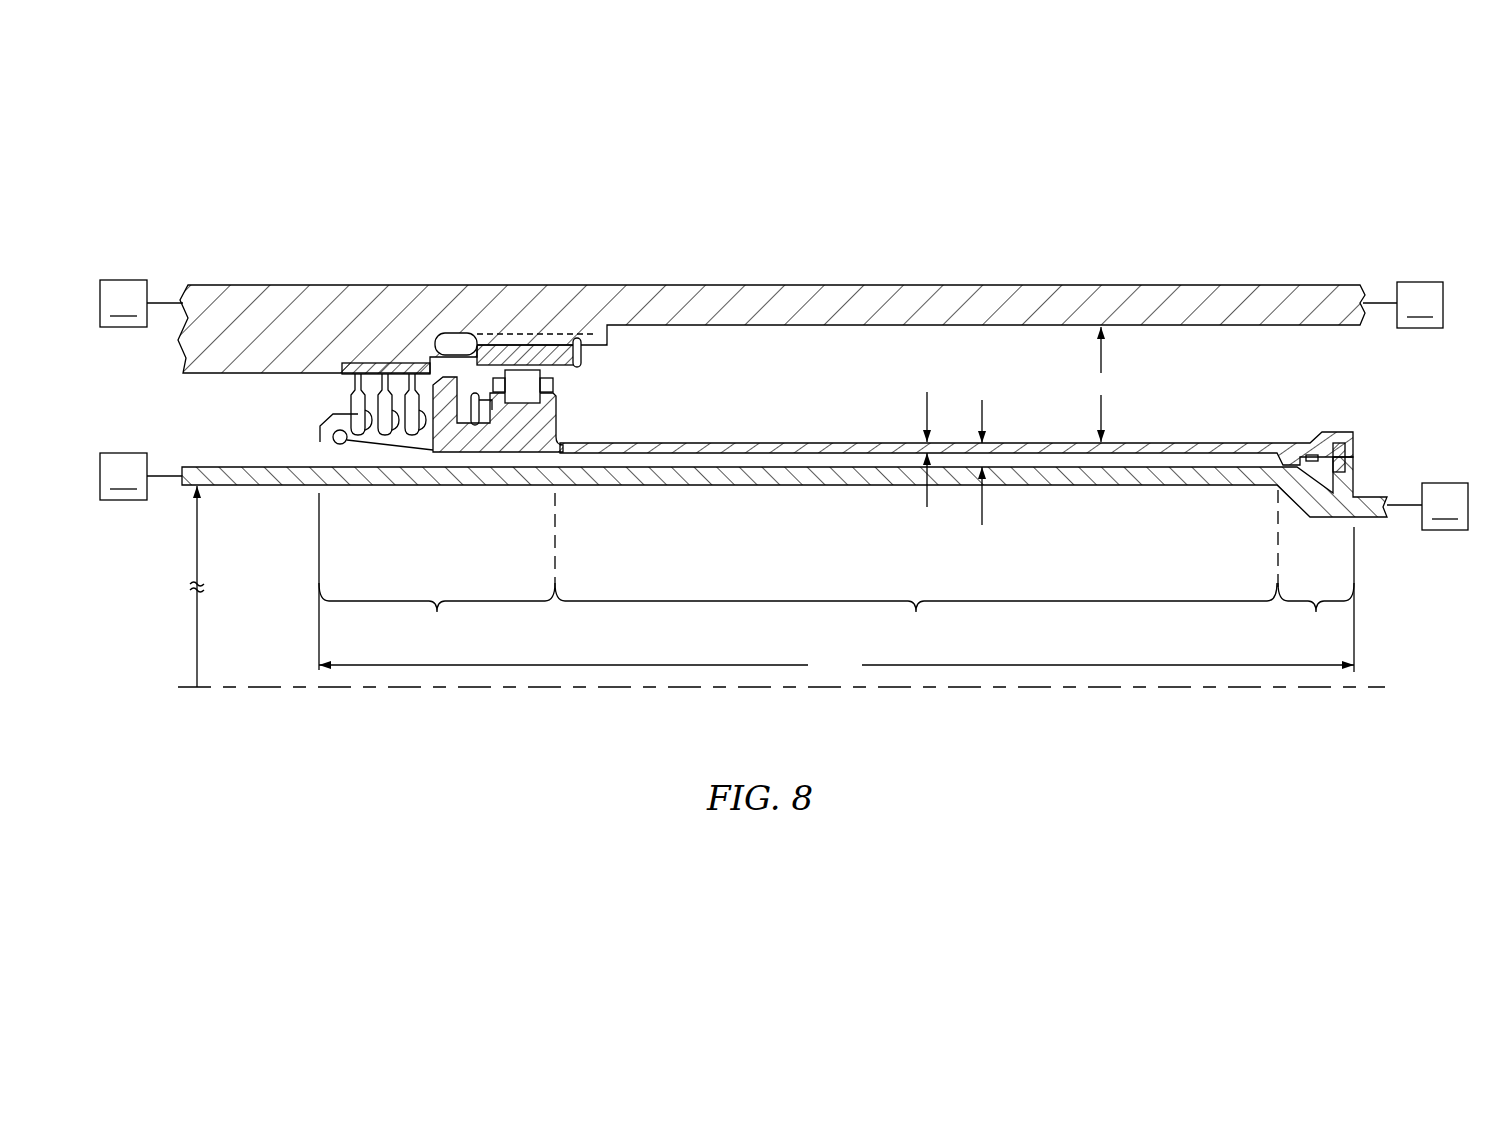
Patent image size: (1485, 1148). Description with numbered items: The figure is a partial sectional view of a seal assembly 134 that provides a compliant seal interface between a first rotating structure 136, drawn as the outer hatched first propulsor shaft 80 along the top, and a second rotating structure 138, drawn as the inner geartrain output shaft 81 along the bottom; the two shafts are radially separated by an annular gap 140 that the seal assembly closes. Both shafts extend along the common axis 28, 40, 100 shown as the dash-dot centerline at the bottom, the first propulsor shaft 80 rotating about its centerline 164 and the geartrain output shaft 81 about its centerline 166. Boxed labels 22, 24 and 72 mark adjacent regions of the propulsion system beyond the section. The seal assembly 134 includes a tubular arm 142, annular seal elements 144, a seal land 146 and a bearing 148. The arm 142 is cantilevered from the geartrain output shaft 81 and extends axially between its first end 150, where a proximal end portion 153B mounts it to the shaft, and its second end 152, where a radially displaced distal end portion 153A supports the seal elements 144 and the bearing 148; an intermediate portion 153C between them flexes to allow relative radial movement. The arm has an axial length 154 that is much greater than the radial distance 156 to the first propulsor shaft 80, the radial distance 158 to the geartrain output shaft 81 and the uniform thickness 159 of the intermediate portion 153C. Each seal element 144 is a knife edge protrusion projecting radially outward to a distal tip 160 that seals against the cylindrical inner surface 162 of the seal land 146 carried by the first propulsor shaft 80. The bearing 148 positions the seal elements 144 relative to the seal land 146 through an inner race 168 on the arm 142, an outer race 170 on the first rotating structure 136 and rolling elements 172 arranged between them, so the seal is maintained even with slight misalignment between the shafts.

The first side reference 22 is at (141, 303).
The second side reference 24 is at (141, 476).
The housing reference 72 is at (1415, 406).
The first propulsor shaft 80 is at (771, 284).
The first rotating structure 136 is at (1196, 284).
The geartrain output shaft 81 is at (784, 518).
The second rotating structure 138 is at (1198, 489).
The annular gap 140 is at (197, 397).
The seal assembly 134 is at (257, 418).
The tubular arm 142 is at (770, 441).
The annular seal elements 144 is at (382, 322).
The seal land 146 is at (345, 381).
The bearing 148 is at (576, 388).
The first end of the arm 150 is at (1355, 447).
The second end of the arm 152 is at (320, 433).
The distal end portion 153A is at (437, 581).
The proximal end portion 153B is at (1316, 599).
The intermediate portion 153C is at (916, 568).
The axial length 154 is at (836, 665).
The radial distance 156 is at (1101, 384).
The radial distance 158 is at (982, 417).
The thickness 159 is at (927, 408).
The distal tip 160 is at (413, 360).
The inner surface 162 is at (449, 370).
The bearing inner race 168 is at (560, 412).
The bearing outer race 170 is at (522, 358).
The bearing rolling elements 172 is at (530, 403).
The axis 28 is at (781, 618).
The axis 40 is at (781, 618).
The axis 100 is at (781, 618).
The centerline/rotational axis of the first propulsor shaft 164 is at (781, 618).
The centerline/rotational axis of the geartrain output shaft 166 is at (1367, 688).